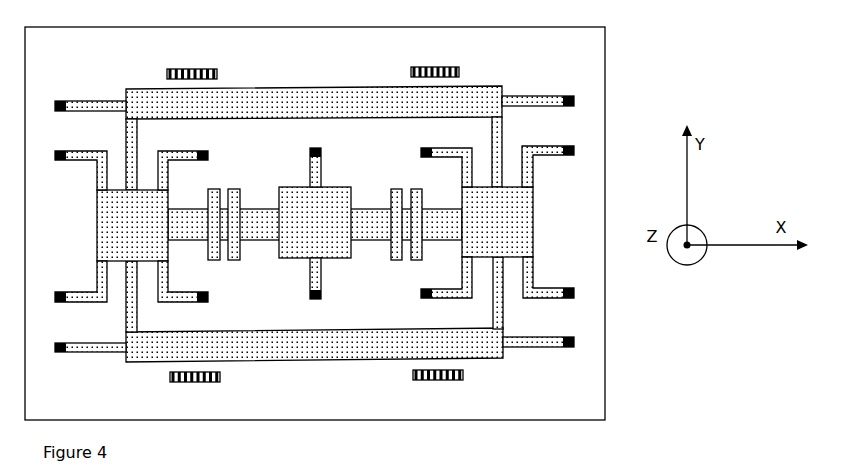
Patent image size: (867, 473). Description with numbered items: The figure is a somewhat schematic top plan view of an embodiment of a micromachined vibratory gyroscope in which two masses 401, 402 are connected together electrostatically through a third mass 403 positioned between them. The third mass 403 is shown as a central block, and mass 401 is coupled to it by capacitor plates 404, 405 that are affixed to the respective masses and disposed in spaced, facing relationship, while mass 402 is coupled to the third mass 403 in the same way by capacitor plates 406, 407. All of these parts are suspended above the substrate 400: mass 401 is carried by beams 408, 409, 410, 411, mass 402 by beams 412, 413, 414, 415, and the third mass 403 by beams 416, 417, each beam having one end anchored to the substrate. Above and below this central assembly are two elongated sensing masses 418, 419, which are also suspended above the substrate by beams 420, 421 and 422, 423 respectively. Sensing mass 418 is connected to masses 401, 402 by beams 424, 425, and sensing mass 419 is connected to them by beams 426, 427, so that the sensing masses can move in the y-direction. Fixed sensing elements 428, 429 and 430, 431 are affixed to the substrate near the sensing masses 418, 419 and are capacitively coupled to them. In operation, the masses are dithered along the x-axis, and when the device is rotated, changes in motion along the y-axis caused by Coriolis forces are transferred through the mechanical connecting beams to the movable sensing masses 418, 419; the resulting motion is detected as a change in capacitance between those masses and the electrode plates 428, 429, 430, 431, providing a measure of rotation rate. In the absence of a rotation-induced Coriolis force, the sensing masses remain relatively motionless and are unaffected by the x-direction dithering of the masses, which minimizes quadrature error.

The substrate 400 is at (315, 223).
The mass 401 is at (108, 230).
The mass 402 is at (523, 227).
The third mass 403 is at (300, 208).
The capacitor plate 404 is at (209, 230).
The capacitor plate 405 is at (239, 230).
The capacitor plate 406 is at (390, 230).
The capacitor plate 407 is at (422, 230).
The beam 408 is at (88, 152).
The beam 409 is at (168, 151).
The beam 410 is at (88, 302).
The beam 411 is at (185, 302).
The beam 412 is at (450, 148).
The beam 413 is at (542, 146).
The beam 414 is at (450, 302).
The beam 415 is at (545, 297).
The beam 416 is at (321, 170).
The beam 417 is at (321, 282).
The sensing mass 418 is at (330, 89).
The sensing mass 419 is at (346, 350).
The beam 420 is at (108, 102).
The beam 421 is at (543, 97).
The beam 422 is at (88, 352).
The beam 423 is at (523, 348).
The beam 424 is at (137, 160).
The beam 425 is at (492, 155).
The beam 426 is at (138, 282).
The beam 427 is at (493, 278).
The fixed sensing element 428 is at (205, 69).
The fixed sensing element 429 is at (439, 67).
The fixed sensing element 430 is at (188, 382).
The fixed sensing element 431 is at (432, 380).